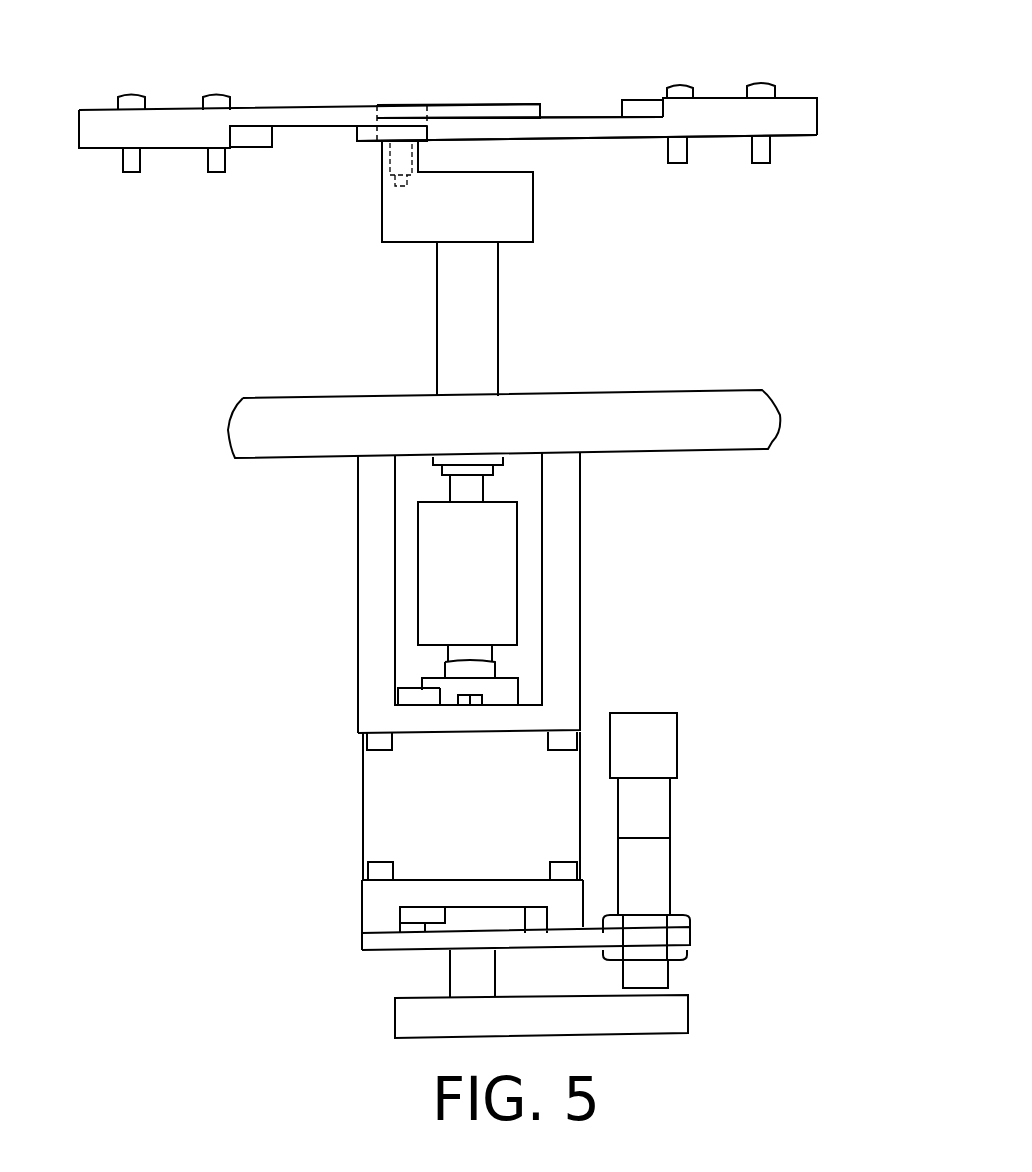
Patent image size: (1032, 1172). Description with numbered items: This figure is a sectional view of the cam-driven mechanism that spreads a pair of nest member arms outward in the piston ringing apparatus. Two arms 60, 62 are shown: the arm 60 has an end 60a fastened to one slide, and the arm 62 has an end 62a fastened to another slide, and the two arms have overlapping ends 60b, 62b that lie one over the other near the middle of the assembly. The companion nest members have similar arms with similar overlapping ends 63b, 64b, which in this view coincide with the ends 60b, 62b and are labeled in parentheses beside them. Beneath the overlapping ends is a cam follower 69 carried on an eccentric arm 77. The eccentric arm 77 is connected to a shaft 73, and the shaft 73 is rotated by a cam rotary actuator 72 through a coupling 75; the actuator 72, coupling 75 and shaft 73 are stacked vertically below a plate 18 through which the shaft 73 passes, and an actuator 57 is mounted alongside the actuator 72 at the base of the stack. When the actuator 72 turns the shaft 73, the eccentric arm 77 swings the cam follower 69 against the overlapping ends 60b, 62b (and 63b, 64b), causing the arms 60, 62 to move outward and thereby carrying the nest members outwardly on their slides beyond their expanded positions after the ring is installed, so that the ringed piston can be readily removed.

The plate 18 is at (732, 405).
The cylinder 57 is at (655, 977).
The arm 60 is at (632, 100).
The end 60a is at (800, 107).
The overlapping end 60b is at (587, 171).
The overlapping end 63b is at (528, 128).
The arm 62 is at (292, 113).
The end 62a is at (112, 133).
The overlapping end 62b is at (523, 66).
The overlapping end 64b is at (518, 107).
The cam follower 69 is at (440, 112).
The cam rotary actuator 72 is at (383, 798).
The shaft 73 is at (485, 355).
The coupling 75 is at (480, 573).
The eccentric arm 77 is at (393, 230).